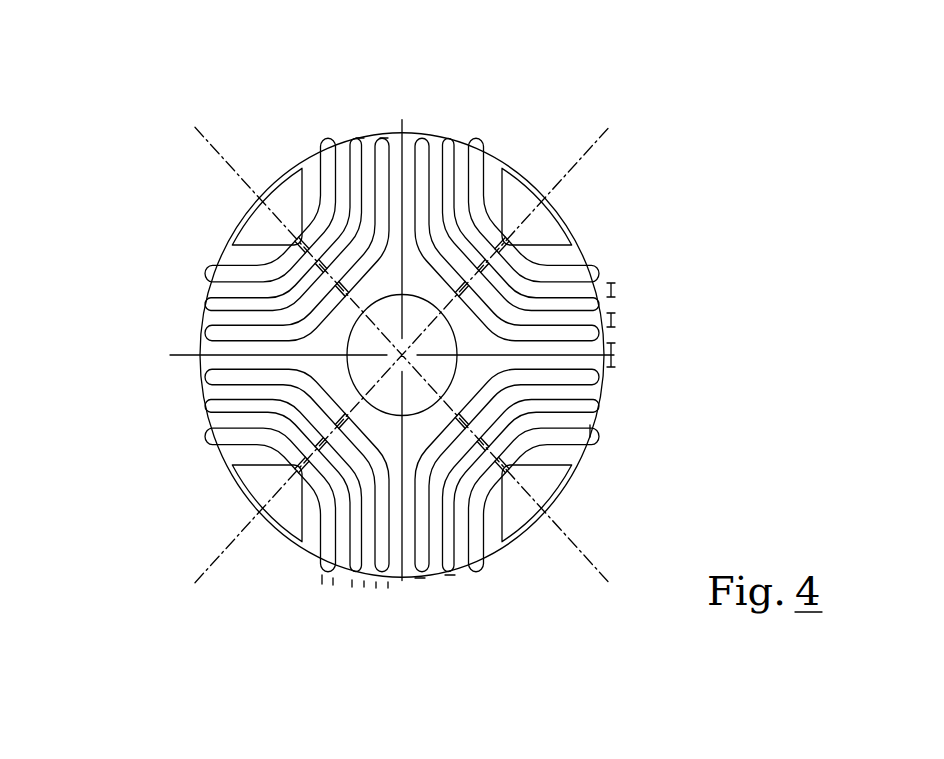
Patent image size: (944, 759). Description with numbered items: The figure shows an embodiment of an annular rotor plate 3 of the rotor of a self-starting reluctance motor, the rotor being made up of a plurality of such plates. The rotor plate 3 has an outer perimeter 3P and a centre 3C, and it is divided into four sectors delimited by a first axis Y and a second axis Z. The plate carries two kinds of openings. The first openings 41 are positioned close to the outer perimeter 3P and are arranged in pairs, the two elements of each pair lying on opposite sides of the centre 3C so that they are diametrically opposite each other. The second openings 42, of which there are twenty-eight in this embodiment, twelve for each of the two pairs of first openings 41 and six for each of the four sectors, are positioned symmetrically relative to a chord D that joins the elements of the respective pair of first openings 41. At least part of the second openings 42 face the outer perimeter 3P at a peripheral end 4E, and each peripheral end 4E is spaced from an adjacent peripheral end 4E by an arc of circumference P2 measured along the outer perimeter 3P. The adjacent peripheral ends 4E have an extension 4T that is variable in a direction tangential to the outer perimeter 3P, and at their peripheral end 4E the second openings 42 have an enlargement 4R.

The rotor plate 3 is at (178, 216).
The outer perimeter 3P is at (200, 405).
The centre 3C is at (396, 358).
The first openings 41 is at (292, 188).
The second openings 42 is at (538, 333).
The peripheral end 4E is at (384, 130).
The extension 4T is at (382, 592).
The enlargement 4R is at (472, 574).
The arc of circumference P2 is at (622, 347).
The first axis Y is at (403, 120).
The second axis Z is at (617, 352).
The chord D is at (608, 128).